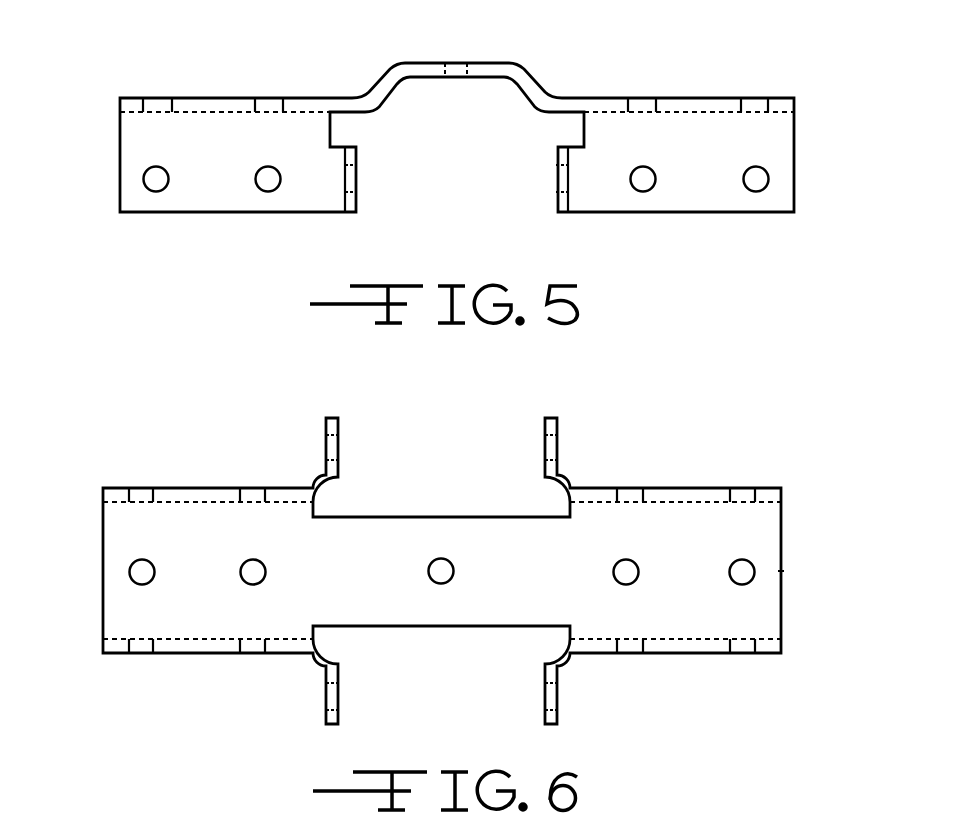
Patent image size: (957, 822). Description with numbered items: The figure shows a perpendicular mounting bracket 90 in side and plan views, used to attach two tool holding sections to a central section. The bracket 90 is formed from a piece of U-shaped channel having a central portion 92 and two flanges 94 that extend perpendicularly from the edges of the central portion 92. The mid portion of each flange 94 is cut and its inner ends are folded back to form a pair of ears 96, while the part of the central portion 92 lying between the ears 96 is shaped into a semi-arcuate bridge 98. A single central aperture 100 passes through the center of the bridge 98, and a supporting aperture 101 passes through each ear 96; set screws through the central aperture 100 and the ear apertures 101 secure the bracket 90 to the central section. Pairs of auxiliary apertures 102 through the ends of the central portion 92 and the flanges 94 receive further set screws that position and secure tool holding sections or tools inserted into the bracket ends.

In FIG. 5, the bracket 90 is at (703, 54).
In FIG. 6, the bracket 90 is at (204, 462).
In FIG. 6, the central portion 92 is at (699, 609).
In FIG. 5, the flanges 94 is at (119, 157).
In FIG. 6, the ears 96 is at (326, 418).
In FIG. 5, the bridge 98 is at (492, 61).
In FIG. 6, the bridge 98 is at (360, 588).
In FIG. 6, the central aperture 100 is at (455, 563).
In FIG. 5, the supporting aperture 101 is at (372, 184).
In FIG. 5, the auxiliary apertures 102 is at (147, 190).
In FIG. 6, the auxiliary apertures 102 is at (742, 558).